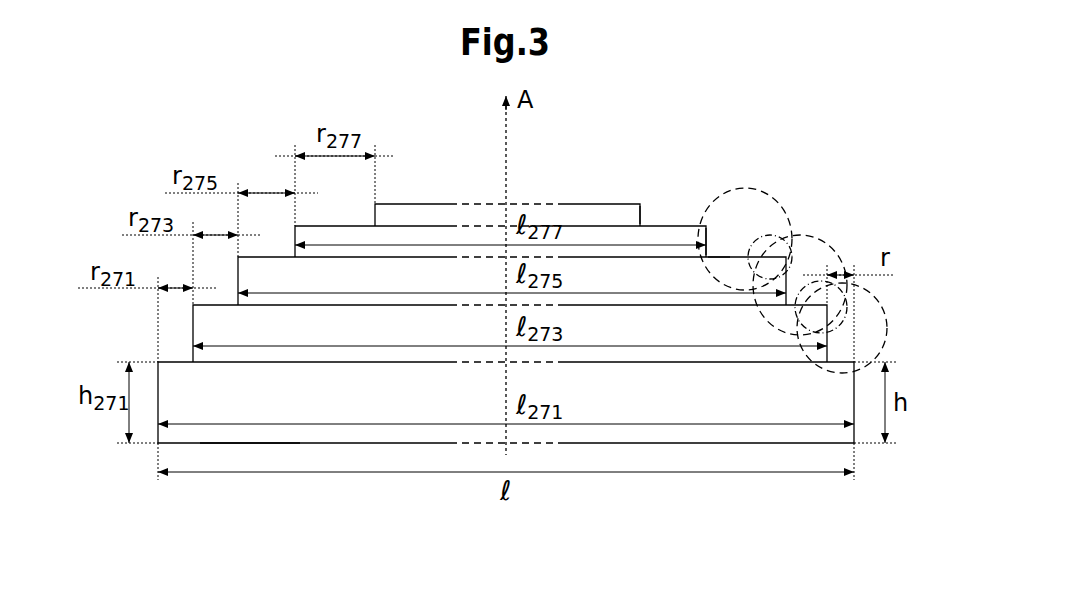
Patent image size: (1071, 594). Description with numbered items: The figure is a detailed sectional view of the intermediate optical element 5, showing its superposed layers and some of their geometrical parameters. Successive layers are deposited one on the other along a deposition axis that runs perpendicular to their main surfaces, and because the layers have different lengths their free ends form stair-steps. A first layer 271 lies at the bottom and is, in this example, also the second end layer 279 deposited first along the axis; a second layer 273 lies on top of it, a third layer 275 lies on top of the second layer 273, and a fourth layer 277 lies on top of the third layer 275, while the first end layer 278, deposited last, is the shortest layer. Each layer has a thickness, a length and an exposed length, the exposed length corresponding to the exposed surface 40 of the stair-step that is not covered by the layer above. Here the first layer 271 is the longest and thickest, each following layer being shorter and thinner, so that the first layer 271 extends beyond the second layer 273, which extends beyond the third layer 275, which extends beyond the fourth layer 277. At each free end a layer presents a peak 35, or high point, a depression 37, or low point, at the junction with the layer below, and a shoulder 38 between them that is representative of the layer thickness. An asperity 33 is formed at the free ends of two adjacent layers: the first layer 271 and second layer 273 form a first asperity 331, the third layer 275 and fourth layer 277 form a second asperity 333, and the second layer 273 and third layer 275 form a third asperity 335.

The intermediate optical element 5 is at (660, 106).
The asperity 33 is at (797, 193).
The peak 35 is at (641, 206).
The depression 37 is at (762, 250).
The shoulder 38 is at (712, 250).
The exposed surface 40 is at (790, 236).
The first layer 271 is at (293, 393).
The second layer 273 is at (352, 325).
The third layer 275 is at (417, 272).
The fourth layer 277 is at (398, 235).
The first end layer 278 is at (437, 217).
The second end layer 279 is at (235, 433).
The first asperity 331 is at (885, 345).
The second asperity 333 is at (708, 240).
The third asperity 335 is at (814, 243).